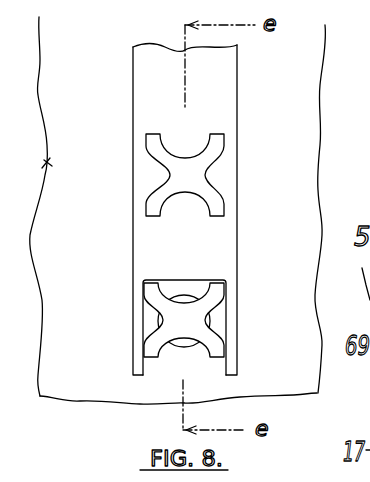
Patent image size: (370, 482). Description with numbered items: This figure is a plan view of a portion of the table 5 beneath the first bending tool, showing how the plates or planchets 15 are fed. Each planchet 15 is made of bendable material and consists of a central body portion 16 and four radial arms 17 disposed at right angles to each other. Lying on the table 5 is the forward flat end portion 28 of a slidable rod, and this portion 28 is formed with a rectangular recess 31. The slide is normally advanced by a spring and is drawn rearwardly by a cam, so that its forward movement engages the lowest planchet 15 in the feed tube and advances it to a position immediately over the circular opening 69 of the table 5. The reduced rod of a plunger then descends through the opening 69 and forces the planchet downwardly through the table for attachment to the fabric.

The bed or table 5 is at (318, 83).
The plates or planchets 15 is at (155, 357).
The central body portion 16 is at (187, 178).
The radial arms 17 is at (152, 143).
The forward flat end portion 28 is at (228, 262).
The rectangular recess 31 is at (170, 278).
The circular opening 69 is at (212, 323).